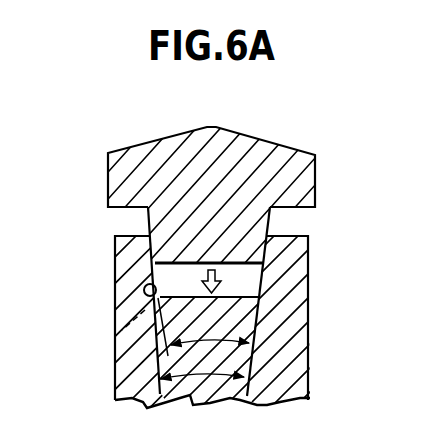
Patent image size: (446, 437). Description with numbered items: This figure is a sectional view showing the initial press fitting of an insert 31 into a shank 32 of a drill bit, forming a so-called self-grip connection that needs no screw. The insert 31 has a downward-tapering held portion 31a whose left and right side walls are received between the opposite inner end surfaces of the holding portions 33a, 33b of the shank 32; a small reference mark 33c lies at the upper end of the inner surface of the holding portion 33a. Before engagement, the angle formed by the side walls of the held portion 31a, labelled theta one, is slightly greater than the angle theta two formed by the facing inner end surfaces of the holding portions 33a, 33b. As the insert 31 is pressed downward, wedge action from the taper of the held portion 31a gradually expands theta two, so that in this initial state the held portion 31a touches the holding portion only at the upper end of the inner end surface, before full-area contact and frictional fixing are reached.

The insert 31 is at (208, 190).
The held portion 31a is at (248, 218).
The shank 32 is at (223, 313).
The holding portion 33a is at (130, 260).
The holding portion 33b is at (295, 268).
The pivot point / corner of groove 33c is at (144, 291).